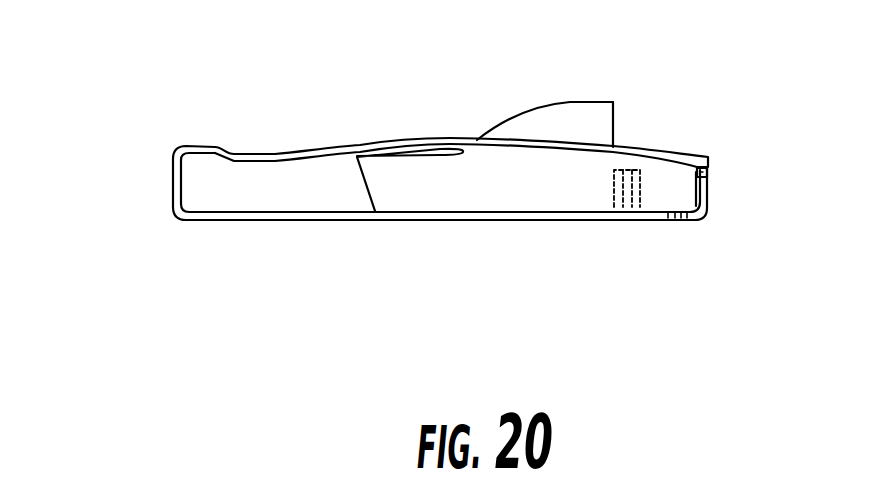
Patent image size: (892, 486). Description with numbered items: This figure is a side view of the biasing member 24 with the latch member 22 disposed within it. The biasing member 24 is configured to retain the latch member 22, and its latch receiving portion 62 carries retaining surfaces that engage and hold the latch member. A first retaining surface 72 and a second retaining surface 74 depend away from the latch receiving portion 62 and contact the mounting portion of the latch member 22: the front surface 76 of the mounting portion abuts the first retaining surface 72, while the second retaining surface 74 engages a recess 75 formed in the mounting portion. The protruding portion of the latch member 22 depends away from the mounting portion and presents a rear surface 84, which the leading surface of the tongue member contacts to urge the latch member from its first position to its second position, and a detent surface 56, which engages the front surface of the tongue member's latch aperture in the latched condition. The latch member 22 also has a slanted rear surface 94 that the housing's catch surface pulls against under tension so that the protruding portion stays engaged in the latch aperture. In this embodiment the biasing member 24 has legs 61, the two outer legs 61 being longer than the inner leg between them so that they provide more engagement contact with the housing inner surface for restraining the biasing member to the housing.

The biasing member 24 is at (172, 170).
The outer legs 61 is at (283, 153).
The latch member 22 is at (436, 150).
The rear surface 84 is at (517, 112).
The detent surface 56 is at (615, 128).
The first retaining surface 72 is at (710, 178).
The front surface 76 is at (710, 188).
The latch receiving portion 62 is at (237, 222).
The rear surface 94 is at (360, 187).
The recess 75 is at (613, 178).
The second retaining surface 74 is at (627, 205).